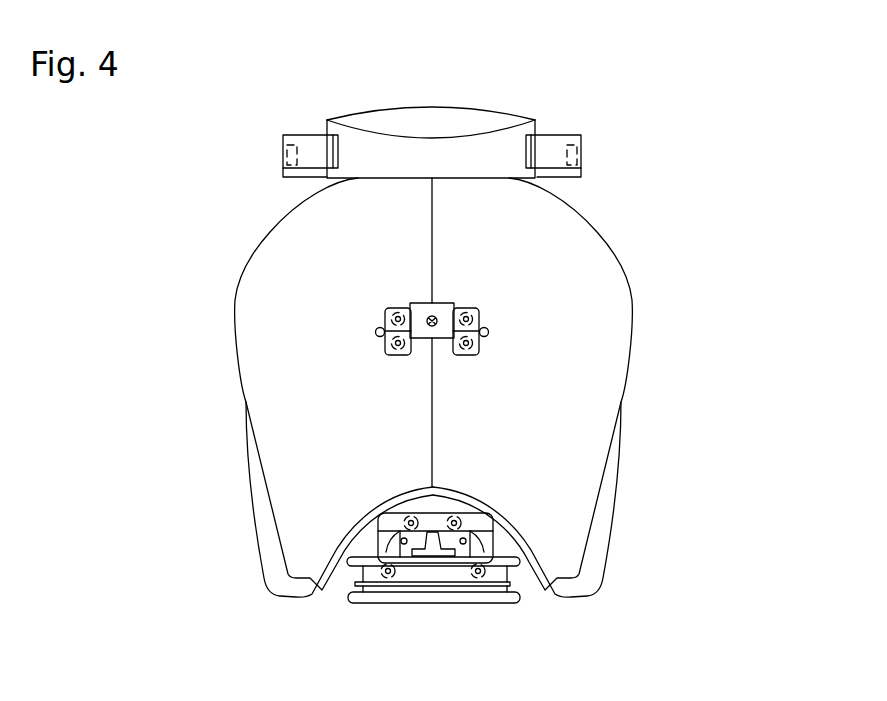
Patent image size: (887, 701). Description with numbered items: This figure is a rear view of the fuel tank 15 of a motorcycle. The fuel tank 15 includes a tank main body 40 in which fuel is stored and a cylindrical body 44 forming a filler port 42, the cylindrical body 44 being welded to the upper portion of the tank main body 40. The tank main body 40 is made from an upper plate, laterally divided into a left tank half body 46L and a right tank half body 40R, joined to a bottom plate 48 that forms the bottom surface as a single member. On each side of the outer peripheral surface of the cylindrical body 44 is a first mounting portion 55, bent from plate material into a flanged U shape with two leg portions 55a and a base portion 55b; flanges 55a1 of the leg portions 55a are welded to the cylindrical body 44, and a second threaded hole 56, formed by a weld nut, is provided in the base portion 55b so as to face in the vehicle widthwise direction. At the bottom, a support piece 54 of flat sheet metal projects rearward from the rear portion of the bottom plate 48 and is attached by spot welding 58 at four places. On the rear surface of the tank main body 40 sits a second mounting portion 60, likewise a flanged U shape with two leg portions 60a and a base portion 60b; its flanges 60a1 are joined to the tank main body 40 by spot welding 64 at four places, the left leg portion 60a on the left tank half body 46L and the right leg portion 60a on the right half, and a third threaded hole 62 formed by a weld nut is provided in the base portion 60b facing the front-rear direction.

The fuel tank 15 is at (688, 192).
The tank main body 40 is at (454, 424).
The right frame portion 40R is at (603, 338).
The left tank half body 46L is at (273, 340).
The bottom plate 48 is at (365, 583).
The filler port 42 is at (472, 120).
The cylindrical body 44 is at (410, 148).
The support piece 54 is at (447, 540).
The first mounting portion 55 is at (282, 132).
The leg portion 55a is at (310, 135).
The flange 55a1 is at (325, 140).
The base portion 55b is at (283, 160).
The second threaded hole 56 is at (283, 152).
The spot welding 58 is at (412, 522).
The second mounting portion 60 is at (408, 300).
The leg portion 60a is at (377, 330).
The flange 60a1 is at (387, 352).
The base portion 60b is at (423, 335).
The third threaded hole 62 is at (437, 318).
The spot welding 64 is at (383, 310).